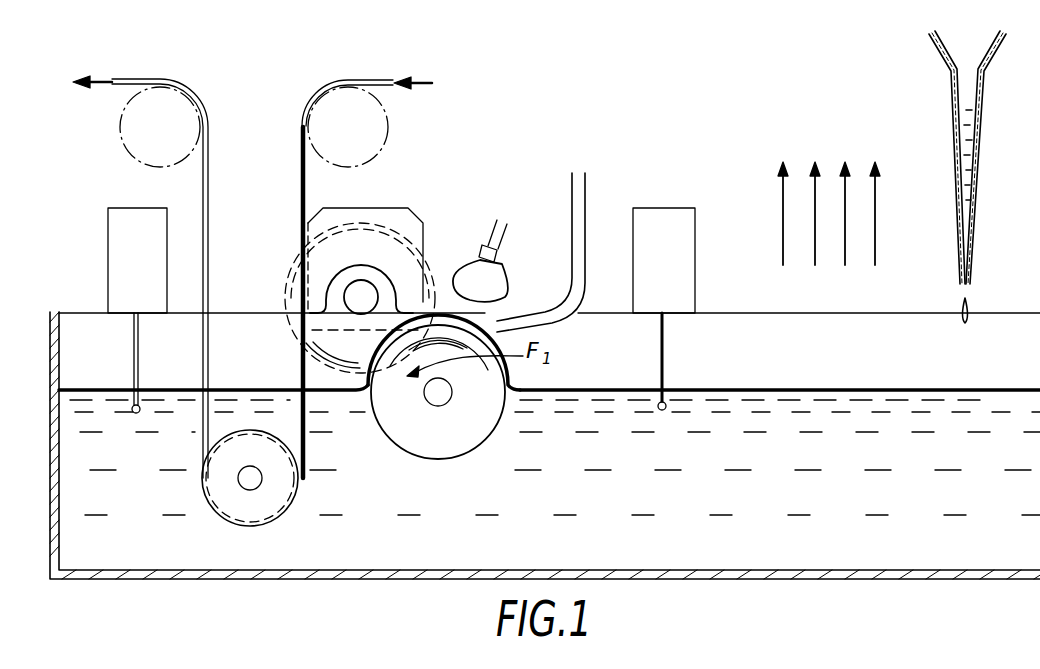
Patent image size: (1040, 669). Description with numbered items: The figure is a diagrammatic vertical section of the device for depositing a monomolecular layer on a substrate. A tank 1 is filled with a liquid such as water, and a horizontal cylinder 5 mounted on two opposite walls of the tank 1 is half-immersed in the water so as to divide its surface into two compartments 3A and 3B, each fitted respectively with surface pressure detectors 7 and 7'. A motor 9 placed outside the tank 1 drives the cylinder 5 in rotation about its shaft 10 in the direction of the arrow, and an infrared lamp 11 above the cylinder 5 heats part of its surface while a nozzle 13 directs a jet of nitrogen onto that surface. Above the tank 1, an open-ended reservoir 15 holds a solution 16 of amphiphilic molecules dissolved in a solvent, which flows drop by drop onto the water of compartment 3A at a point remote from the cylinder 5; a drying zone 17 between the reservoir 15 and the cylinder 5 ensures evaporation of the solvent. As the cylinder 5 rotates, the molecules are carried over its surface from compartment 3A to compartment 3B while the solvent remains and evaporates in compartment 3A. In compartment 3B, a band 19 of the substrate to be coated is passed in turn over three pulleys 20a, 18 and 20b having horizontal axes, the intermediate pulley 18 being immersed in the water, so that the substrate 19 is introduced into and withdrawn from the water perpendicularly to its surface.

The tank 1 is at (53, 430).
The compartment 3A is at (990, 395).
The compartment 3B is at (120, 397).
The cylinder 5 is at (462, 448).
The surface pressure detector 7 is at (664, 284).
The surface pressure detector 7' is at (118, 298).
The motor 9 is at (421, 229).
The shaft 10 is at (448, 398).
The infrared lamp 11 is at (502, 262).
The nozzle 13 is at (585, 191).
The reservoir 15 is at (952, 100).
The solution of amphiphilic molecules 16 is at (962, 164).
The drying zone 17 is at (782, 182).
The pulley 18 is at (253, 512).
The band of substrate 19 is at (303, 187).
The pulley 20a is at (388, 108).
The pulley 20b is at (122, 142).